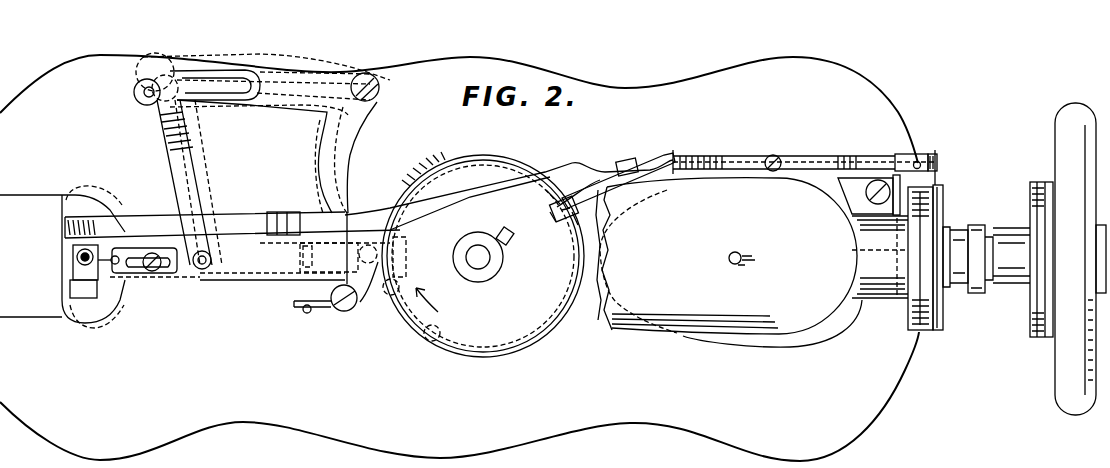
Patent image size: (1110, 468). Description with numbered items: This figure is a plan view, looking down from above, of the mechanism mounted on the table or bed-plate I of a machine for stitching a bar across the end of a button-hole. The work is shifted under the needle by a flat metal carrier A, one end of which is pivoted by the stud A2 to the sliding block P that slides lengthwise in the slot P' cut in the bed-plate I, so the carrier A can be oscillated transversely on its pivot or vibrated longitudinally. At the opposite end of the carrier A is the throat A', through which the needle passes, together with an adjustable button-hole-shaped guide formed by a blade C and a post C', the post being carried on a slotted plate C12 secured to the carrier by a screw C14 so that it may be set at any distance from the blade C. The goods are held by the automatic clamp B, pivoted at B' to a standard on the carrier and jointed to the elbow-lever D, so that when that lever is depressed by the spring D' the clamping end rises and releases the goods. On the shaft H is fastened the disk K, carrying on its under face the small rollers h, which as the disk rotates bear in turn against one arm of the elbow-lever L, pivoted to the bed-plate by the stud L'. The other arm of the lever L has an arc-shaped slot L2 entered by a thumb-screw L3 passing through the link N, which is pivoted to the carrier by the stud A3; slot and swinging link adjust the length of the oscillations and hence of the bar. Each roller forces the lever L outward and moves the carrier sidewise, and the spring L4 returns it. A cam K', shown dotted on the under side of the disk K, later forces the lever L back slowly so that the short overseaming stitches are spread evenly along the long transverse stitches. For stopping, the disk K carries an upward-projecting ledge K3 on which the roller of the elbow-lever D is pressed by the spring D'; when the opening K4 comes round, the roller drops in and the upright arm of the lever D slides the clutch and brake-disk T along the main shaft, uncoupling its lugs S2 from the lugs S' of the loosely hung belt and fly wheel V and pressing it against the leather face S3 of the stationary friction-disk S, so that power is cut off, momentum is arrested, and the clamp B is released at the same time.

The bed-plate I is at (459, 258).
The cam K' is at (483, 248).
The disk K is at (483, 256).
The shaft H is at (483, 254).
The rollers h is at (432, 341).
The stud A2 is at (370, 300).
The elbow-lever D is at (757, 220).
The spring D' is at (805, 153).
The opening K4 is at (583, 216).
The projecting ledge K3 is at (598, 290).
The friction-disk S is at (886, 254).
The leather facing S3 is at (939, 330).
The clutch and brake-disk T is at (975, 293).
The lugs S2 is at (998, 285).
The lugs S' is at (994, 241).
The belt and fly wheel V is at (1076, 268).
The carrier A is at (232, 246).
The automatic clamp B is at (114, 225).
The pivot B' is at (283, 208).
The throat A' is at (85, 262).
The blade C is at (90, 290).
The post C' is at (113, 254).
The slotted plate C12 is at (137, 272).
The screw C14 is at (155, 272).
The stud A3 is at (203, 270).
The link N is at (182, 182).
The thumb-screw L3 is at (136, 92).
The arc-shaped slot L2 is at (204, 100).
The elbow-lever L is at (277, 156).
The stud L' is at (373, 89).
The spring L4 is at (320, 309).
The sliding block P is at (338, 257).
The slot P' is at (292, 262).